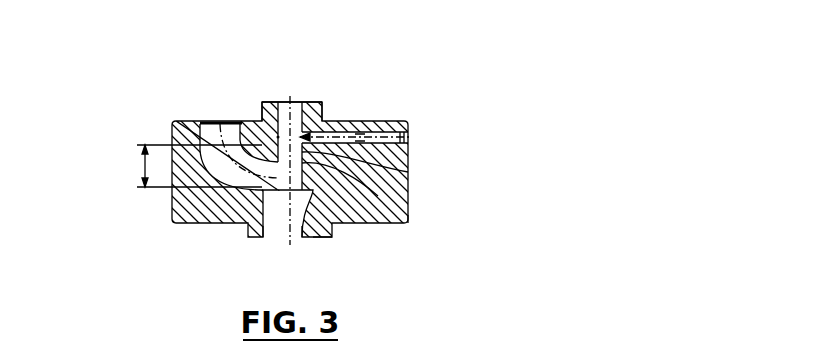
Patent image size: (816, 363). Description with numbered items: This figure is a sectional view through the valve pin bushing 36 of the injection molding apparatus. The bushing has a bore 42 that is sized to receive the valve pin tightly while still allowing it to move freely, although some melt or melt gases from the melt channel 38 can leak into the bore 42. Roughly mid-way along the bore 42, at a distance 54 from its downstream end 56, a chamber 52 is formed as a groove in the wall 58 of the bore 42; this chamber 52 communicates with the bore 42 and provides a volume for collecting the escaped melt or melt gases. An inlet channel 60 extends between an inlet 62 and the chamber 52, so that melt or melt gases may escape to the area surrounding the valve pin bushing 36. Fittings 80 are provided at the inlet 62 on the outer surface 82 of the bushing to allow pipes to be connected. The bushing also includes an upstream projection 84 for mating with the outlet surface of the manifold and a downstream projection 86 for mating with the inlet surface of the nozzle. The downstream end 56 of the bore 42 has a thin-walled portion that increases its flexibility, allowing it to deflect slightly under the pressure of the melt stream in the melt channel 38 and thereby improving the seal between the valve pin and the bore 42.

The valve pin bushing 36 is at (172, 213).
The melt channel 38 is at (198, 121).
The bore 42 is at (372, 199).
The chamber 52 is at (276, 136).
The distance 54 is at (143, 165).
The downstream end 56 is at (295, 236).
The wall 58 is at (372, 172).
The inlet channel 60 is at (360, 137).
The inlet 62 is at (408, 137).
The fittings 80 is at (402, 131).
The outer surface 82 is at (410, 218).
The upstream projection 84 is at (313, 101).
The downstream projection 86 is at (330, 232).